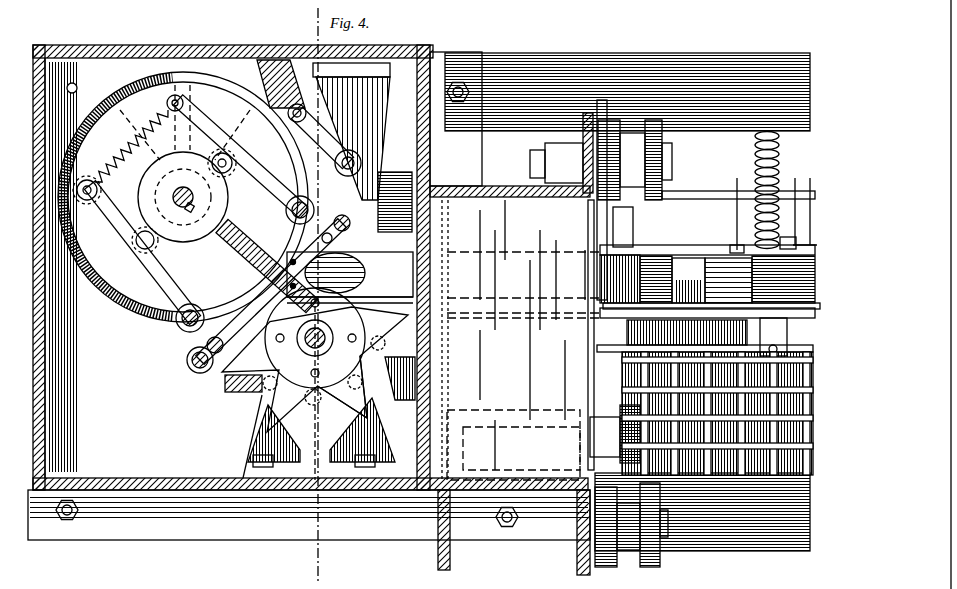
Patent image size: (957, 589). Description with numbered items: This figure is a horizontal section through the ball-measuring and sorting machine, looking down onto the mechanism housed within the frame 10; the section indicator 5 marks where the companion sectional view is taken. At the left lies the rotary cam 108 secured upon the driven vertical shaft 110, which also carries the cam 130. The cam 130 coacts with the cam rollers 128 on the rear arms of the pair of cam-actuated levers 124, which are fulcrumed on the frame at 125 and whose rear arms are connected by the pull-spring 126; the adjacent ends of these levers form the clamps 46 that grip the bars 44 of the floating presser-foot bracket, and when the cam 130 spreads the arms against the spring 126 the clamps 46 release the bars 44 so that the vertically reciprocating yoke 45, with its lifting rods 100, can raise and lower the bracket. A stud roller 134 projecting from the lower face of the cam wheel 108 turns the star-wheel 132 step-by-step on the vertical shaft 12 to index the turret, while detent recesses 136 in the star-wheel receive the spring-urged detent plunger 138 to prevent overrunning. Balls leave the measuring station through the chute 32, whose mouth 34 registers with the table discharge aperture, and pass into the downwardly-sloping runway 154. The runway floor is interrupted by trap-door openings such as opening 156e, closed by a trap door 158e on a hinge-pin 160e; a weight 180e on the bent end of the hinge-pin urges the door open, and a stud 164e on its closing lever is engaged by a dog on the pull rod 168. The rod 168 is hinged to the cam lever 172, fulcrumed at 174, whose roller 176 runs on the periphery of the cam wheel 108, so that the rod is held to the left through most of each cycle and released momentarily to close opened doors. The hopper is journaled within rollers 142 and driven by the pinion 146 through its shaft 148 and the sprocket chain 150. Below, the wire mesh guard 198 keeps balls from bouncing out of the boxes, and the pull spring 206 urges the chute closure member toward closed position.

The section line 5- 5 is at (319, 36).
The frame 10 is at (80, 413).
The vertical shaft 12 is at (256, 388).
The chute 32 is at (364, 254).
The mouth 34 is at (372, 250).
The bars 44 is at (203, 346).
The yoke 45 is at (255, 294).
The clamps 46 is at (342, 214).
The lifting rods 100 is at (376, 181).
The rotary cam 108 is at (121, 318).
The vertical shaft 110 is at (177, 212).
The cam-actuated levers 124 is at (196, 209).
The fulcrums 125 is at (287, 218).
The pull-spring 126 is at (112, 168).
The cam rollers 128 is at (220, 153).
The cam 130 is at (188, 210).
The star-wheel 132 is at (382, 373).
The stud roller 134 is at (133, 239).
The detent recesses 136 is at (268, 395).
The detent plunger 138 is at (268, 405).
The rollers 142 is at (613, 168).
The pinion 146 is at (600, 403).
The shaft 148 is at (418, 440).
The sprocket chain 150 is at (447, 363).
The runway 154 is at (657, 277).
The trap-door opening 156e is at (683, 260).
The trap door 158e is at (723, 273).
The hinge-pin 160e is at (738, 200).
The stud 164e is at (713, 323).
The pull rod 168 is at (558, 297).
The cam lever 172 is at (325, 138).
The fulcrum 174 is at (365, 150).
The roller 176 is at (291, 106).
The weight 180e is at (815, 186).
The wire mesh guard 198 is at (743, 457).
The pull spring 206 is at (756, 141).